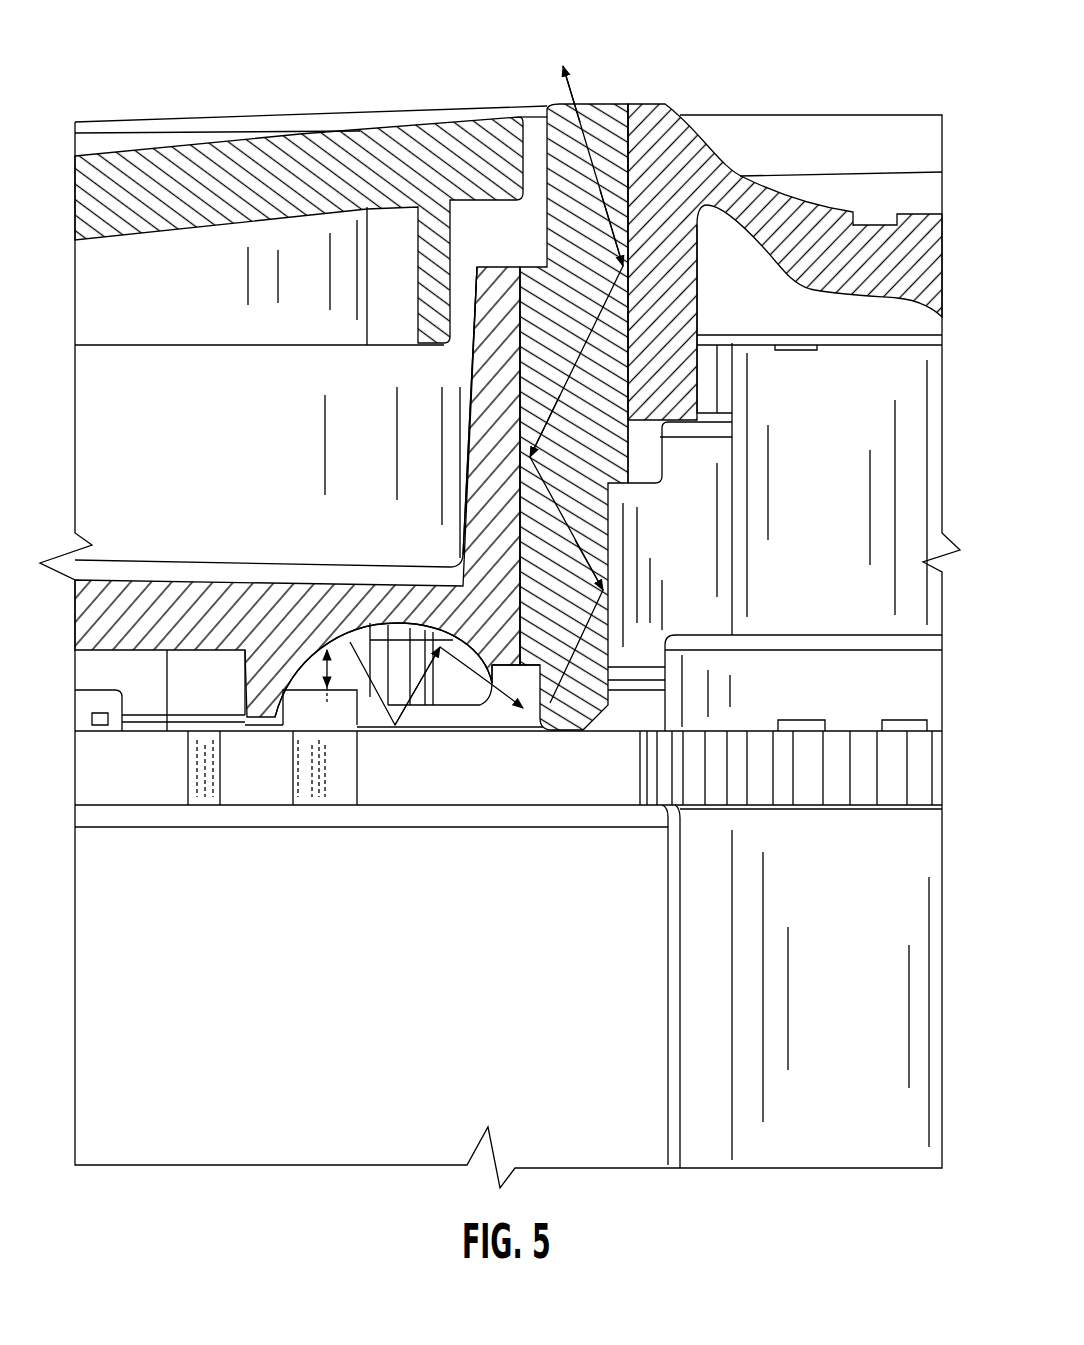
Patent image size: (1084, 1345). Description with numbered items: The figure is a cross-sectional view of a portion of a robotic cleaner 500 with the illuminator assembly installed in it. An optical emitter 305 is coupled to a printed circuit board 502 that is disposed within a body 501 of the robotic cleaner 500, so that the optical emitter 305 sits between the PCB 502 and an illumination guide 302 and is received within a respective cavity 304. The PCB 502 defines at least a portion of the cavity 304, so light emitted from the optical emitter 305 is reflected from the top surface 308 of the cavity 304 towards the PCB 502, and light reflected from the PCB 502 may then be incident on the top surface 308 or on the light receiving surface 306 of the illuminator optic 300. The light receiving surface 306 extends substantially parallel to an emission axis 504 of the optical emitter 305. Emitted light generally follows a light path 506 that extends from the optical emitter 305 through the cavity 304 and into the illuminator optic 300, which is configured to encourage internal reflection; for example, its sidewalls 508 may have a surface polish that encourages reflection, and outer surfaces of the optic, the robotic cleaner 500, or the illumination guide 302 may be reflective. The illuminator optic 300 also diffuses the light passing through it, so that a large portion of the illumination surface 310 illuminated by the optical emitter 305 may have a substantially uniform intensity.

The robotic cleaner 500 is at (845, 87).
The body 501 is at (250, 165).
The illumination surface 310 is at (607, 103).
The illuminator optic 300 is at (628, 425).
The light path 506 is at (655, 322).
The illumination guide 302 is at (250, 600).
The sidewalls 508 is at (513, 300).
The top surface 308 is at (387, 615).
The light receiving surface 306 is at (530, 675).
The optical emitter 305 is at (305, 698).
The emission axis 504 is at (327, 696).
The cavity 304 is at (452, 714).
The printed circuit board 502 is at (375, 768).